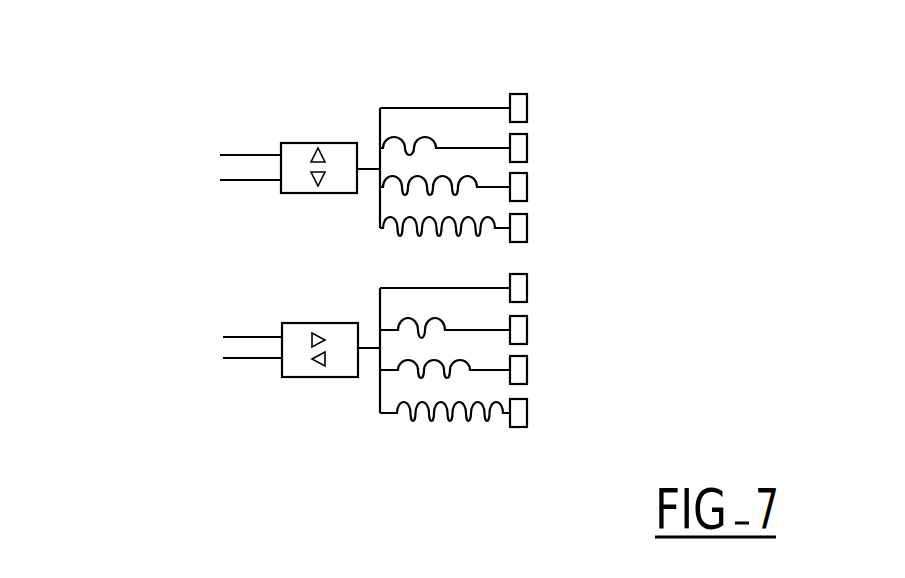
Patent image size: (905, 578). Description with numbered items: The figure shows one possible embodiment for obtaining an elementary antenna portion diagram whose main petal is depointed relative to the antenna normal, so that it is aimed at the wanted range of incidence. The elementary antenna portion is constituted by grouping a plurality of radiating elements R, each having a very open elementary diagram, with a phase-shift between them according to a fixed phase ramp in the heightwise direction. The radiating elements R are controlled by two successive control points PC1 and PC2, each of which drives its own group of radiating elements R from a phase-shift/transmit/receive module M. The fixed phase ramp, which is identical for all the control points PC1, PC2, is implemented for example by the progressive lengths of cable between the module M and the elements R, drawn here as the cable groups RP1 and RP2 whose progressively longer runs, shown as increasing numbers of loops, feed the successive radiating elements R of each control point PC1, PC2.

The first resistor network RP1 is at (438, 88).
The second resistor network RP2 is at (375, 450).
The first control point PC1 is at (493, 125).
The second control point PC2 is at (501, 405).
The phase-shift/transmit/receive module M is at (300, 187).
The radiating elements R is at (527, 108).